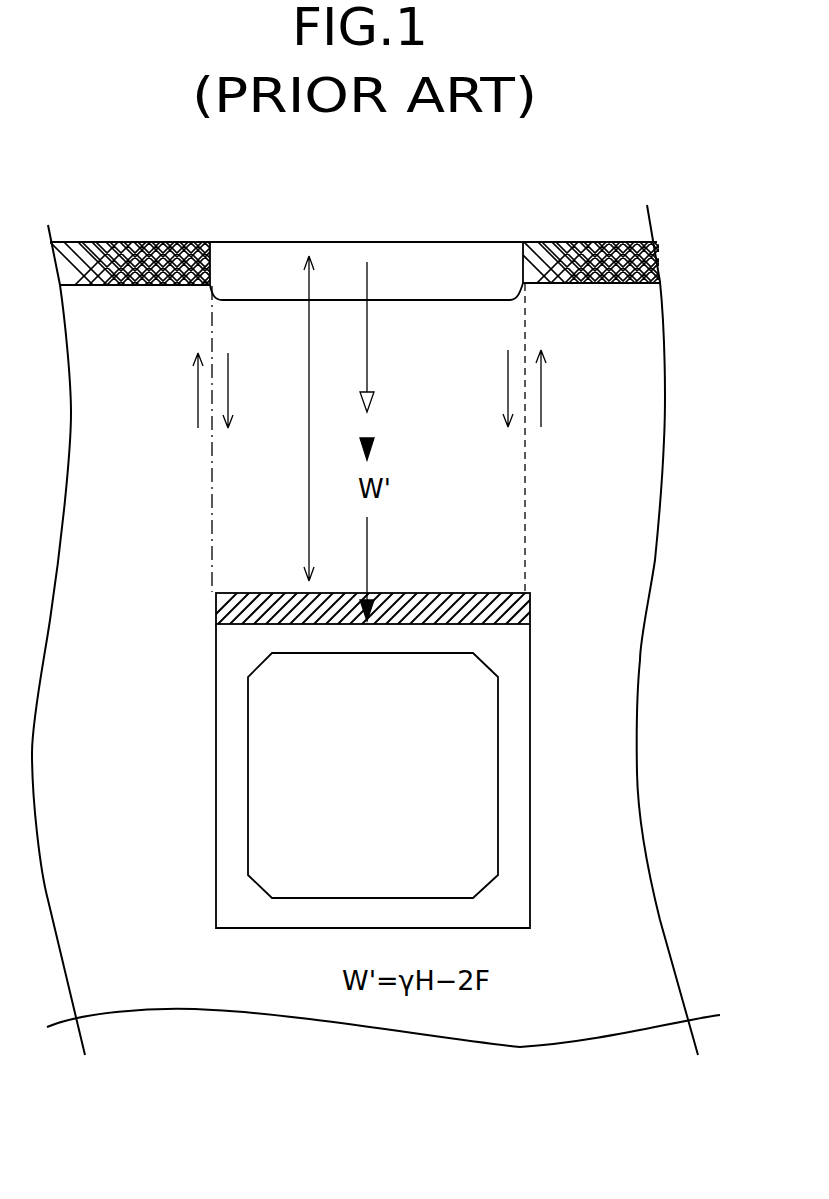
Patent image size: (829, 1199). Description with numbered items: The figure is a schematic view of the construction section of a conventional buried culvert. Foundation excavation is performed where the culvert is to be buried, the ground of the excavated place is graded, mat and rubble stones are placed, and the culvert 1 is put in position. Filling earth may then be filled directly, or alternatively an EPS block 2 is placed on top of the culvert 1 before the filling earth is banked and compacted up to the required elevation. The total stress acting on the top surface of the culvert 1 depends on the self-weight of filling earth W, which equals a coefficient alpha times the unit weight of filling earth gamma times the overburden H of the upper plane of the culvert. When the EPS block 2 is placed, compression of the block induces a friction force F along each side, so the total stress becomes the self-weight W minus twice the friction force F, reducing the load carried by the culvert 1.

The culvert 1 is at (515, 787).
The EPS block 2 is at (530, 599).
The overburden H is at (295, 418).
The self-weight of filling earth W is at (384, 337).
The friction force F is at (370, 389).